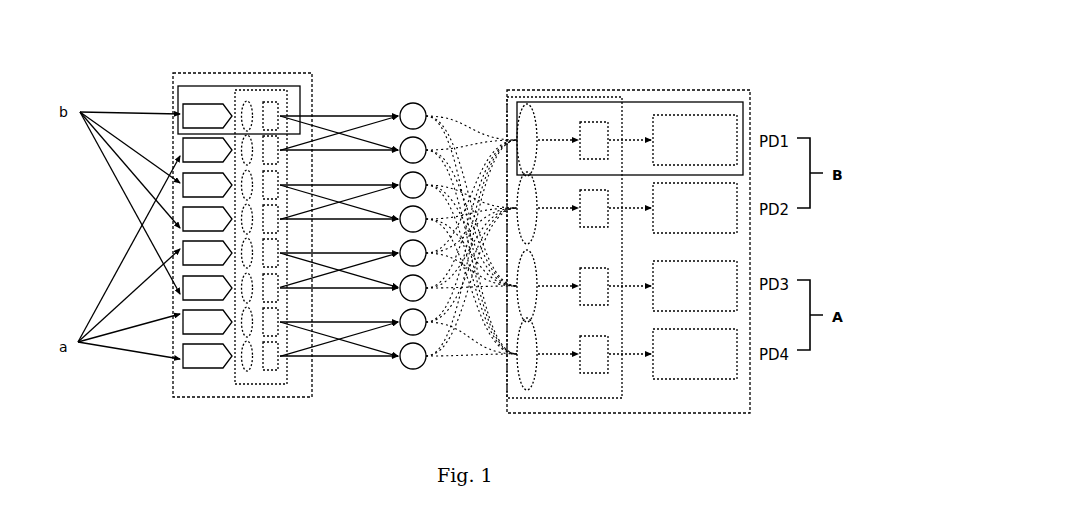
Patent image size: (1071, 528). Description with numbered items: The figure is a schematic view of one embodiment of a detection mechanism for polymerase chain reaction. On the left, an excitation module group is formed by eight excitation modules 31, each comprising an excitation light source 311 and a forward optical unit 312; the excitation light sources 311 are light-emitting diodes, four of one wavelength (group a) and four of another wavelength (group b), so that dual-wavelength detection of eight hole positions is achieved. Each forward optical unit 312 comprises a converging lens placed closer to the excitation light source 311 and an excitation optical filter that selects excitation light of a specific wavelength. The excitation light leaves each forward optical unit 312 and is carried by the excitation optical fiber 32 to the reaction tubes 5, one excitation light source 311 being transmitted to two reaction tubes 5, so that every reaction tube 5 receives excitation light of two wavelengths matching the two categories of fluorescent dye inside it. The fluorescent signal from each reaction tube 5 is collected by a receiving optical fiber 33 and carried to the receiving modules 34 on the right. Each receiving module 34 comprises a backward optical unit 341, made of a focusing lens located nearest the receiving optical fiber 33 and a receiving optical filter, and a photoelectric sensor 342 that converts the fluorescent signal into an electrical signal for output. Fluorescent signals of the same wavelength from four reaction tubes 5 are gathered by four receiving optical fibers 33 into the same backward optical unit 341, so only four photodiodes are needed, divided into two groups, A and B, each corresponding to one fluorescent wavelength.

The excitation module 31 is at (183, 87).
The excitation light source 311 is at (200, 100).
The forward optical unit 312 is at (261, 90).
The excitation optical fiber 32 is at (348, 112).
The reaction tube 5 is at (415, 104).
The receiving optical fiber 33 is at (472, 123).
The receiving module 34 is at (747, 95).
The backward optical unit 341 is at (567, 98).
The photoelectric sensor 342 is at (697, 115).